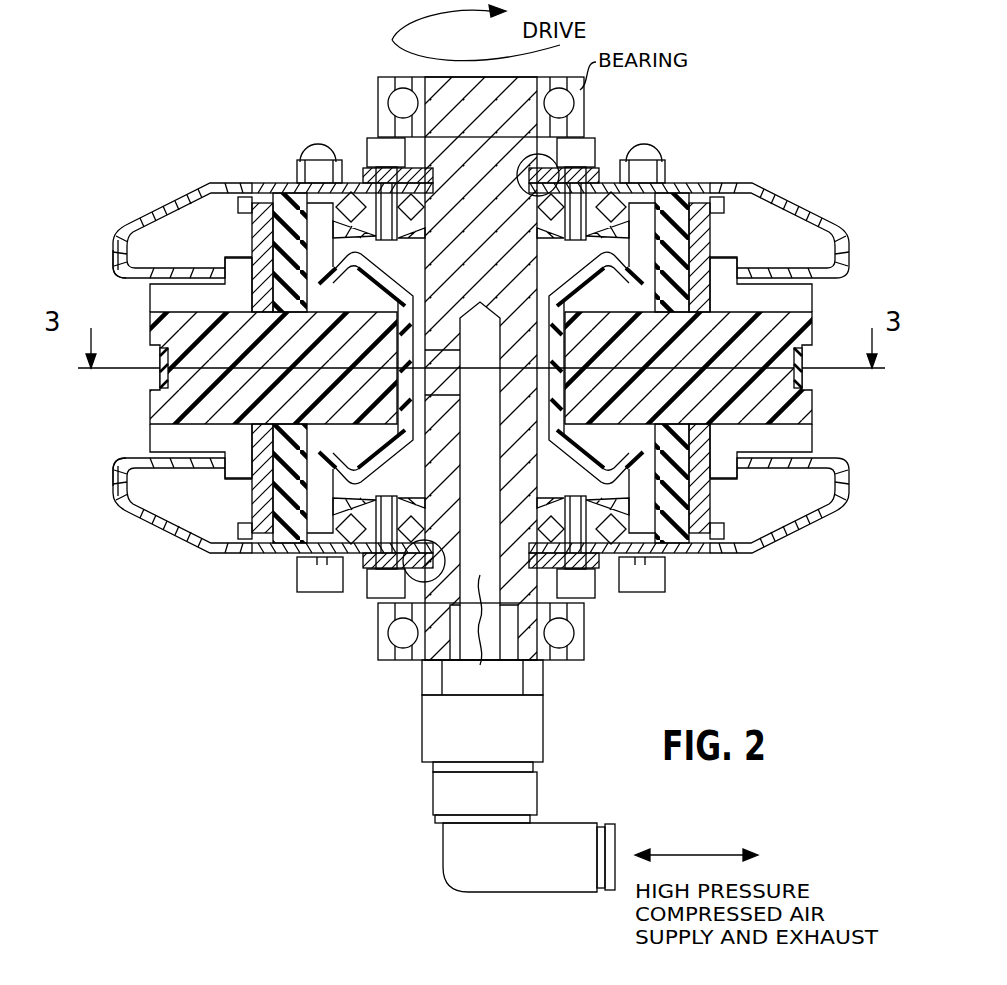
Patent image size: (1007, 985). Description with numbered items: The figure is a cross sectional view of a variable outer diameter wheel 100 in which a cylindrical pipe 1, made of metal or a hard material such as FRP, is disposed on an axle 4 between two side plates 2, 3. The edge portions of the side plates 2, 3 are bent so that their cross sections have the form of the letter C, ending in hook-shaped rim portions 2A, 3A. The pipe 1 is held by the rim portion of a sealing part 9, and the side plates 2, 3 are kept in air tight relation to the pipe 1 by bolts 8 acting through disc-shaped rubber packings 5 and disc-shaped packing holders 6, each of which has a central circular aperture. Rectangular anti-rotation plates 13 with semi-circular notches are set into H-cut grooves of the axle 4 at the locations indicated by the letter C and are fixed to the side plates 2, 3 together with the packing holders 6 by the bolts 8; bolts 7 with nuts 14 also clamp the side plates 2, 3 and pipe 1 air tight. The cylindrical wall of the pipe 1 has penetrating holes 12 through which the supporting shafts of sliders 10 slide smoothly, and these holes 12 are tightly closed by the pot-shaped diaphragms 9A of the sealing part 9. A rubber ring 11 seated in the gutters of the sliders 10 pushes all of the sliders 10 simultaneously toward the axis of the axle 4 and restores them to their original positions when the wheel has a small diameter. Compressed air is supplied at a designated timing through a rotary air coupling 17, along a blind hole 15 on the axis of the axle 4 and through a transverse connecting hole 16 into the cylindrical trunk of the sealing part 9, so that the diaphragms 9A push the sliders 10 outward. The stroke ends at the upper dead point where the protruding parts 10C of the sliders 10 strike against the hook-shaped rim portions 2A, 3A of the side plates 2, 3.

The variable outer diameter wheel 100 is at (88, 211).
The pipe 1 is at (249, 196).
The side plate 2 is at (170, 201).
The hook-shaped rim portion 2A is at (118, 276).
The side plate 3 is at (114, 490).
The hook-shaped rim portion 3A is at (128, 506).
The axle 4 is at (442, 638).
The disc-shaped rubber packing 5 is at (386, 160).
The disc-shaped packing holder 6 is at (322, 167).
The bolt 7 is at (312, 578).
The bolt 8 is at (580, 600).
The sealing part 9 is at (262, 518).
The diaphragm 9A is at (377, 278).
The slider 10 is at (172, 402).
The protruding part 10C is at (748, 258).
The rubber ring 11 is at (158, 350).
The penetrating hole 12 is at (252, 460).
The anti-rotation plate 13 is at (582, 162).
The nut 14 is at (662, 150).
The blind hole 15 is at (482, 677).
The transverse connecting hole 16 is at (365, 540).
The rotary air coupling 17 is at (512, 727).
The H-cut groove location C is at (552, 156).